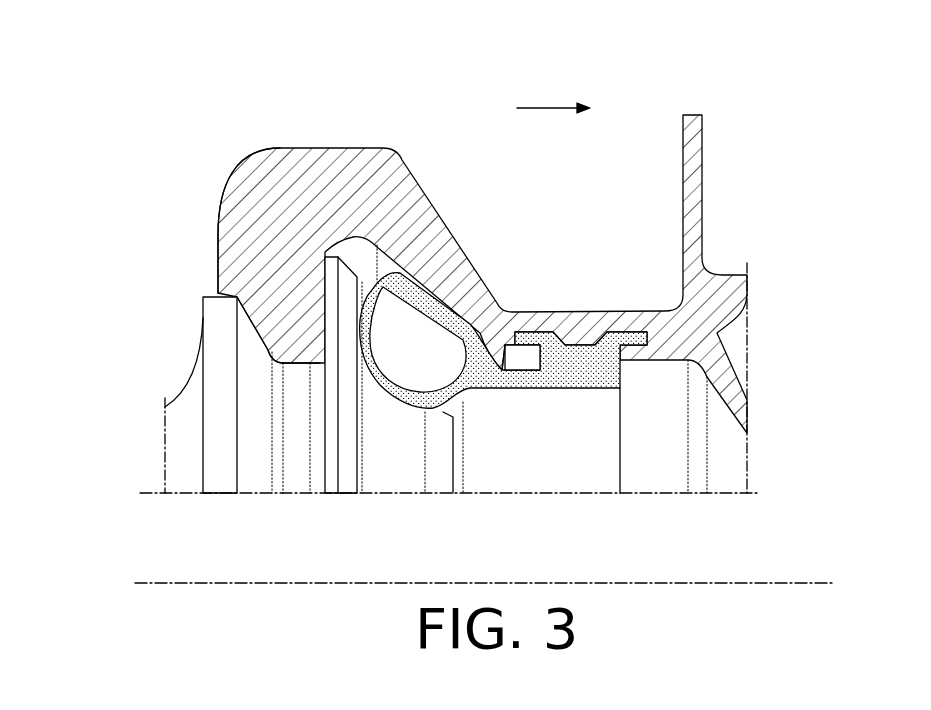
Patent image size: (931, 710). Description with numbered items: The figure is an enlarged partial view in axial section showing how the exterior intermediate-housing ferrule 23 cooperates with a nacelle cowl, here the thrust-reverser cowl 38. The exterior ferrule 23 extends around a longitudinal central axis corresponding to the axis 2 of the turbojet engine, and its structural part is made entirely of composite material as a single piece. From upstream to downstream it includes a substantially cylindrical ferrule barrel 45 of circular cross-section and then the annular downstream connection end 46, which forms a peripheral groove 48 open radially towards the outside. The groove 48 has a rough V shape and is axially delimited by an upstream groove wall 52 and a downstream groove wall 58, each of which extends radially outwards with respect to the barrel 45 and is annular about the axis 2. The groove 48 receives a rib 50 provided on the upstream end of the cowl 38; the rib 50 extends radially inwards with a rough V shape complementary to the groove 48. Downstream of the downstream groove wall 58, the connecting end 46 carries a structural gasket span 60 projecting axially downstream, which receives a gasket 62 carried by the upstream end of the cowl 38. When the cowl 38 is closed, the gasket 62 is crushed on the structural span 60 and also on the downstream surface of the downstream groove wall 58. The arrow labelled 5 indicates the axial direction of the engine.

The axis 2 is at (785, 582).
The axial direction 5 is at (552, 107).
The exterior ferrule 23 is at (184, 343).
The thrust-reverser cowl 38 is at (748, 320).
The ferrule barrel 45 is at (178, 452).
The annular downstream connection end 46 is at (256, 501).
The peripheral groove 48 is at (262, 318).
The rib 50 is at (293, 307).
The upstream groove wall 52 is at (220, 318).
The downstream groove wall 58 is at (353, 275).
The structural gasket span 60 is at (378, 452).
The gasket 62 is at (440, 397).